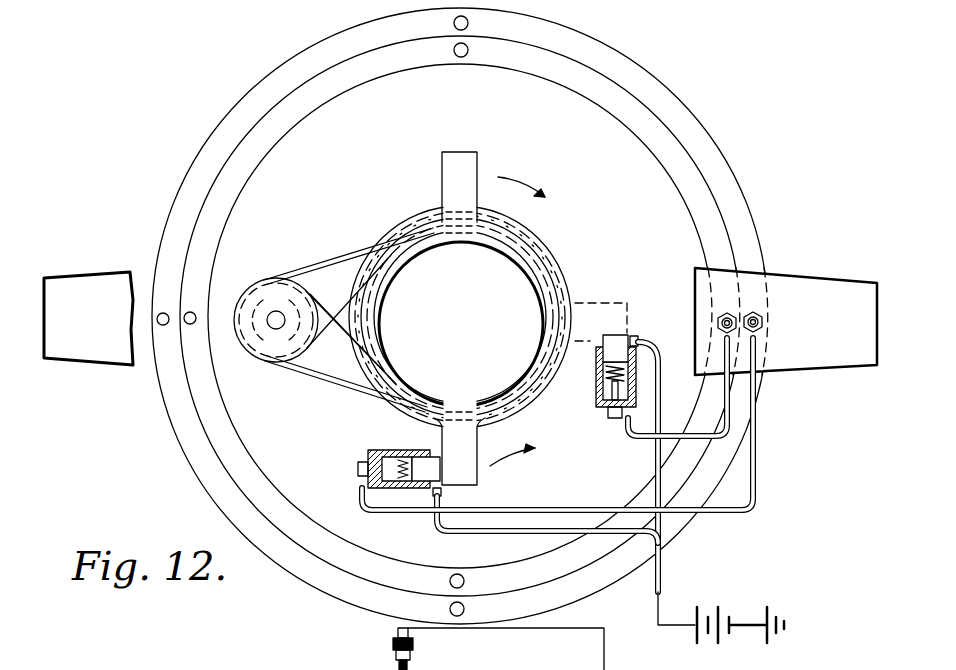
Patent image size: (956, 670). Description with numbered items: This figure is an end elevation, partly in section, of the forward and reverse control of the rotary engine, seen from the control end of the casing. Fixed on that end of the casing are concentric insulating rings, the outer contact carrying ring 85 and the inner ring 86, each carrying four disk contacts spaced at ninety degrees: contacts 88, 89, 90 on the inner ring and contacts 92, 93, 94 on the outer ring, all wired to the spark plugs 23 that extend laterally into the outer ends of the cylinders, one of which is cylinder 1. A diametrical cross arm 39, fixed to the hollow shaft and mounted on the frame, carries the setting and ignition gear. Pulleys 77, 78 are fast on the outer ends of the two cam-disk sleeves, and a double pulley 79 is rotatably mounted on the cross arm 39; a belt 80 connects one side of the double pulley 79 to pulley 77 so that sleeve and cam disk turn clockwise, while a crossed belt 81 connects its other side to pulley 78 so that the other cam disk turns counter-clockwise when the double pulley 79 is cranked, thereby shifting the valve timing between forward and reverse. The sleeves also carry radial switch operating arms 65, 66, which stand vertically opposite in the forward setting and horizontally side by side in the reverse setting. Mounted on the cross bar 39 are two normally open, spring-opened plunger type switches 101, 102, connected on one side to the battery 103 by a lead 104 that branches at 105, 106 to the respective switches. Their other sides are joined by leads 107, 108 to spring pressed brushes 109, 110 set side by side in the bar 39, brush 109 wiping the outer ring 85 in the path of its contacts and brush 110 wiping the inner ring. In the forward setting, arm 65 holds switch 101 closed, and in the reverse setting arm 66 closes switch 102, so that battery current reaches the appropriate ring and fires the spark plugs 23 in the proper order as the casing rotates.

The cylinder 1 is at (431, 644).
The spark plug 23 is at (390, 652).
The diametrical cross arm 39 is at (840, 283).
The switch operating arm 65 is at (480, 483).
The switch operating arm 66 is at (470, 157).
The pulley 77 is at (542, 252).
The pulley 78 is at (532, 232).
The double pulley 79 is at (257, 298).
The belt 80 is at (316, 262).
The crossed belt 81 is at (345, 349).
The outer contact carrying ring 85 is at (210, 136).
The inner ring 86 is at (272, 132).
The disk contact 88 is at (185, 313).
The disk contact 89 is at (465, 57).
The disk contact 90 is at (465, 581).
The disk contact 92 is at (160, 326).
The disk contact 93 is at (465, 609).
The disk contact 94 is at (468, 22).
The plunger type switch 101 is at (368, 450).
The plunger type switch 102 is at (597, 392).
The battery 103 is at (733, 636).
The lead 104 is at (660, 597).
The branch 105 is at (493, 534).
The branch 106 is at (655, 470).
The lead 107 is at (395, 513).
The lead 108 is at (727, 428).
The spring pressed brush 109 is at (762, 318).
The spring pressed brush 110 is at (717, 318).